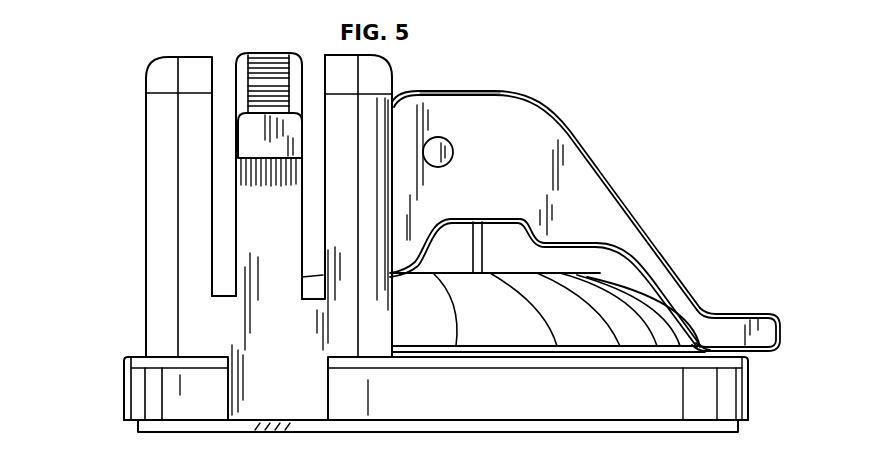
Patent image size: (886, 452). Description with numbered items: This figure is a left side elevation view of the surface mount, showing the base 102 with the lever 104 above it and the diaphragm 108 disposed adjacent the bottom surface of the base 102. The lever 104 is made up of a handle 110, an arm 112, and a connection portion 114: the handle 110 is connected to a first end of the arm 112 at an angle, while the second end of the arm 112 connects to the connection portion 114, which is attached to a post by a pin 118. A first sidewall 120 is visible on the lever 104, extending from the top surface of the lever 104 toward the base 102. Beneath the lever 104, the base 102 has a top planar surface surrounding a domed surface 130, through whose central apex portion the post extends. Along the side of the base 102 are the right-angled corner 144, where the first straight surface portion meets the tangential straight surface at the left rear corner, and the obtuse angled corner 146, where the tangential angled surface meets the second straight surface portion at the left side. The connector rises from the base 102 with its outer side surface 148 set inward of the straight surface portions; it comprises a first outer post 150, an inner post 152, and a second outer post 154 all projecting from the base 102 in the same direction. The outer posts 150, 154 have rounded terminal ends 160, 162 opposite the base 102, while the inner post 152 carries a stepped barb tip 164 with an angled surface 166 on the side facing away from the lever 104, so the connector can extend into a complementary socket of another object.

The base 102 is at (750, 391).
The lever 104 is at (610, 197).
The diaphragm 108 is at (687, 434).
The handle 110 is at (757, 314).
The arm 112 is at (587, 146).
The connection portion 114 is at (467, 91).
The pin 118 is at (447, 142).
The first sidewall 120 is at (590, 203).
The domed surface 130 is at (605, 295).
The right-angled corner 144 is at (125, 383).
The obtuse angled corner 146 is at (180, 403).
The outer side surface 148 is at (212, 319).
The first outer post 150 is at (172, 148).
The inner post 152 is at (250, 195).
The second outer post 154 is at (332, 260).
The rounded terminal end 160 is at (166, 56).
The rounded terminal end 162 is at (393, 70).
The stepped barb tip 164 is at (255, 52).
The angled surface 166 is at (253, 79).